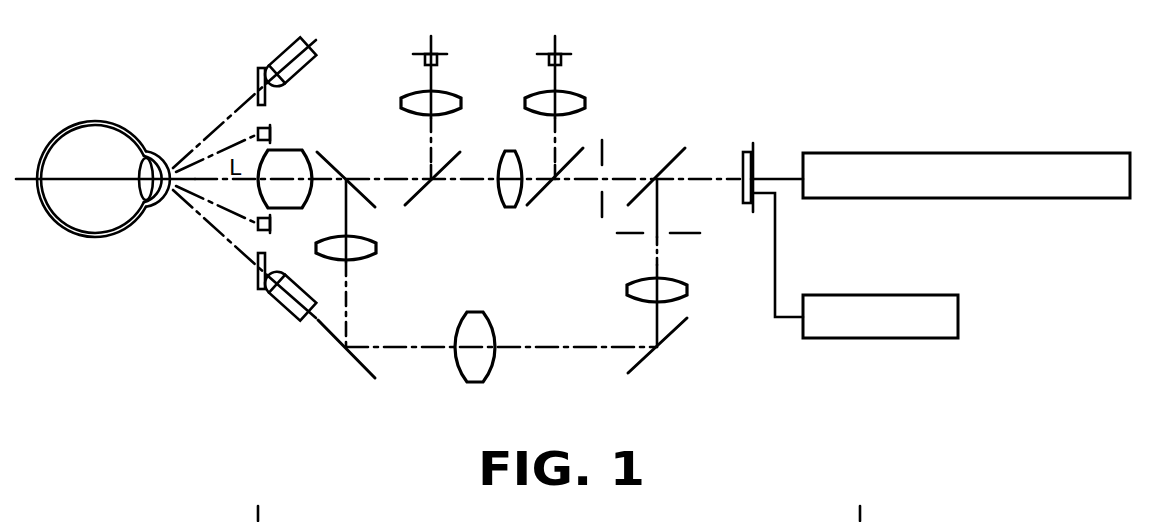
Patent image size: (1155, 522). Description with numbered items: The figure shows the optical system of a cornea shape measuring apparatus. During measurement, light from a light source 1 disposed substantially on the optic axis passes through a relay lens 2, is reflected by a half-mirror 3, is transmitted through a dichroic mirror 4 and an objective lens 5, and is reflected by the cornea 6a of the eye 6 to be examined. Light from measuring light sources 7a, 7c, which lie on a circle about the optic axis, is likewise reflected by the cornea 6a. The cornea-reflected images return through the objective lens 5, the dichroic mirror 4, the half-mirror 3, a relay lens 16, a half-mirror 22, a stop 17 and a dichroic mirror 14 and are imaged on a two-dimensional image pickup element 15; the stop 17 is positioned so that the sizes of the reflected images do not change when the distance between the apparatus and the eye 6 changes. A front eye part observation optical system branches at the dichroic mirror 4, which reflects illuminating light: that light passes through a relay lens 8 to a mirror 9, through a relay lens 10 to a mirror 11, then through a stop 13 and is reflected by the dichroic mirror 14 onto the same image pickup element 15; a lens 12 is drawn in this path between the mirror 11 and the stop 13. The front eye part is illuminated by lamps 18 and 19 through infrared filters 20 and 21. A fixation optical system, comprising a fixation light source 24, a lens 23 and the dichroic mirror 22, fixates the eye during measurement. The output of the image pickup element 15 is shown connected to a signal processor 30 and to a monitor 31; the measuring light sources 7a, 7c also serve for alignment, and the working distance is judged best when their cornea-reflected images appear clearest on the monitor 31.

The light source 1 is at (440, 56).
The relay lens 2 is at (462, 100).
The half-mirror 3 is at (412, 208).
The dichroic mirror 4 is at (335, 165).
The objective lens 5 is at (294, 150).
The eye to be examined 6 is at (107, 236).
The cornea 6a is at (165, 150).
The light source 7a is at (272, 128).
The light source 7c is at (272, 224).
The relay lens 8 is at (380, 248).
The mirror 9 is at (333, 338).
The relay lens 10 is at (490, 368).
The mirror 11 is at (680, 325).
The lens 12 is at (687, 292).
The stop 13 is at (700, 233).
The dichroic mirror 14 is at (675, 158).
The two-dimensional image pickup element 15 is at (745, 145).
The relay lens 16 is at (507, 207).
The stop 17 is at (604, 145).
The lamp 18 is at (290, 315).
The lamp 19 is at (280, 55).
The infrared filter 20 is at (257, 287).
The infrared filter 21 is at (256, 82).
The half-mirror (dichroic mirror) 22 is at (530, 205).
The lens 23 is at (585, 100).
The fixation light source 24 is at (563, 56).
The signal processor 30 is at (1038, 153).
The monitor 31 is at (920, 295).